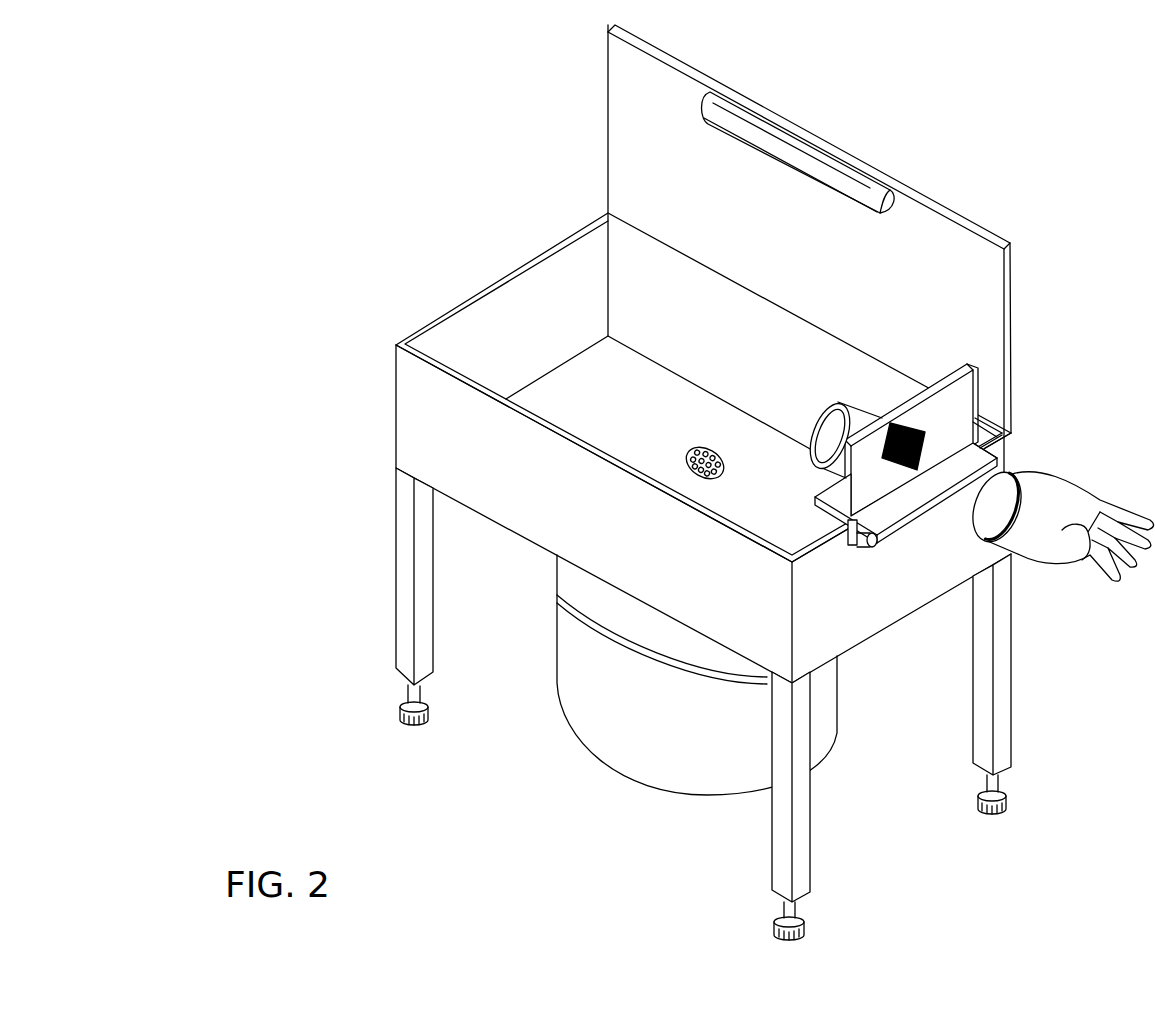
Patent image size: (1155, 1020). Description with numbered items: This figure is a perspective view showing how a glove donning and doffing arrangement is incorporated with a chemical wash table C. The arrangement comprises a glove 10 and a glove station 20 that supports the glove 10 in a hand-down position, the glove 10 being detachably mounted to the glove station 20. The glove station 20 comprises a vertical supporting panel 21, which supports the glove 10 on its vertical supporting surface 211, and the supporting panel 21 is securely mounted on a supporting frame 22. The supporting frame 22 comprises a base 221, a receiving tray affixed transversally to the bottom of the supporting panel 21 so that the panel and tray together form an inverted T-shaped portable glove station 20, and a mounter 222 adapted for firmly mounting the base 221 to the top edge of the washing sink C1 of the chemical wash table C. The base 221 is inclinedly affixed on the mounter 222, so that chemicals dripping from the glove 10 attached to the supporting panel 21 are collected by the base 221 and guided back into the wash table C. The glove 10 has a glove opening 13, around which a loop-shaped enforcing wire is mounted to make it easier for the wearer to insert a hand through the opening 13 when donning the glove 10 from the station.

The glove 10 is at (969, 461).
The glove opening 13 is at (996, 517).
The glove station 20 is at (1006, 352).
The vertical supporting panel 21 is at (990, 400).
The vertical supporting surface 211 is at (963, 388).
The supporting frame 22 is at (978, 489).
The base 221 is at (1000, 433).
The mounter 222 is at (862, 548).
The chemical wash table C is at (903, 600).
The washing sink C1 is at (812, 545).